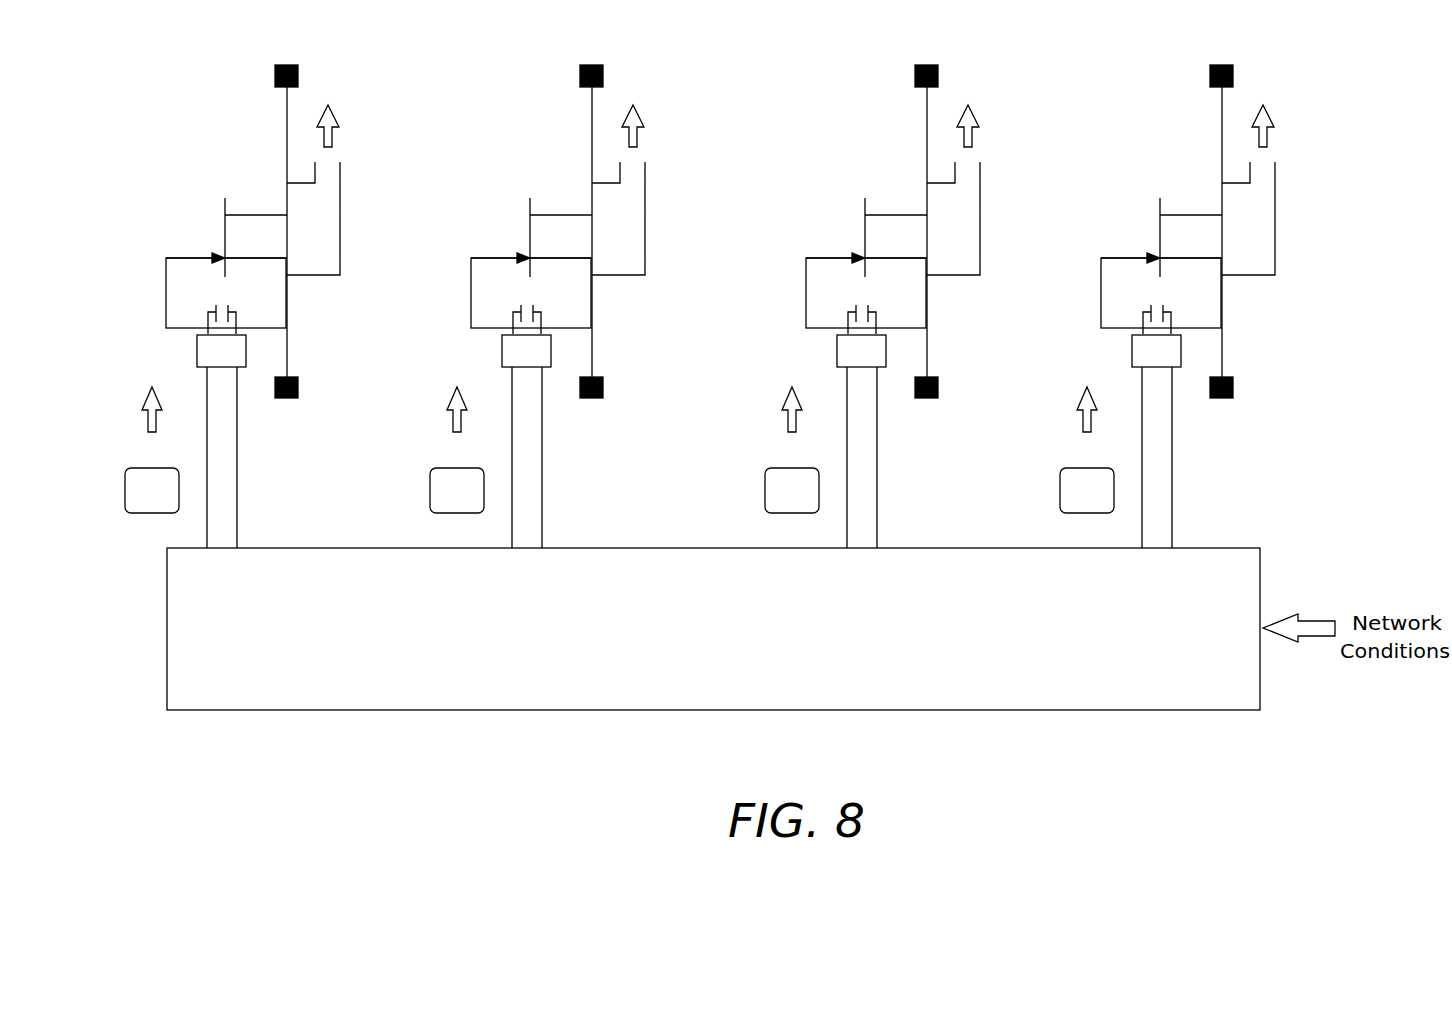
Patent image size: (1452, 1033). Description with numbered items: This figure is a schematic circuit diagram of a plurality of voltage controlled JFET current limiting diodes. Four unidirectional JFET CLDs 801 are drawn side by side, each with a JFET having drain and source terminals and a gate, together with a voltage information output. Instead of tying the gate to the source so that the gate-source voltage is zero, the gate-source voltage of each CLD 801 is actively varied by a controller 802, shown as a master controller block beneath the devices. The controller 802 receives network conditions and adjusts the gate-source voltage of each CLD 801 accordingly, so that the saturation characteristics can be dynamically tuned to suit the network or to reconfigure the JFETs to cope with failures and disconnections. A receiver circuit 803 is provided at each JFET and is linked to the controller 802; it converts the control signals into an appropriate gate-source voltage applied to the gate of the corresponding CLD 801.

The unidirectional JFET CLD 801 is at (1172, 150).
The controller 802 is at (233, 641).
The receiver circuit 803 is at (238, 367).